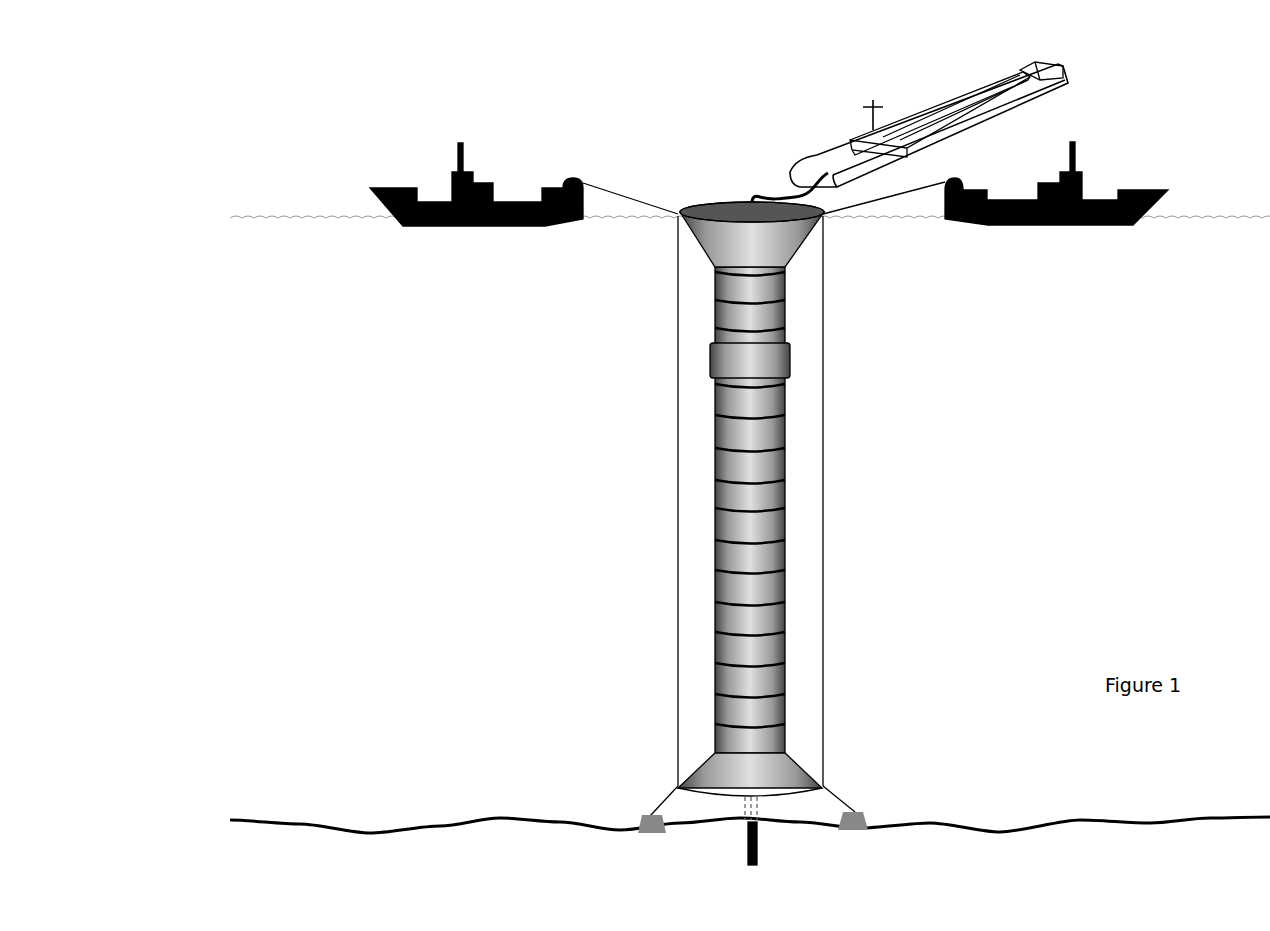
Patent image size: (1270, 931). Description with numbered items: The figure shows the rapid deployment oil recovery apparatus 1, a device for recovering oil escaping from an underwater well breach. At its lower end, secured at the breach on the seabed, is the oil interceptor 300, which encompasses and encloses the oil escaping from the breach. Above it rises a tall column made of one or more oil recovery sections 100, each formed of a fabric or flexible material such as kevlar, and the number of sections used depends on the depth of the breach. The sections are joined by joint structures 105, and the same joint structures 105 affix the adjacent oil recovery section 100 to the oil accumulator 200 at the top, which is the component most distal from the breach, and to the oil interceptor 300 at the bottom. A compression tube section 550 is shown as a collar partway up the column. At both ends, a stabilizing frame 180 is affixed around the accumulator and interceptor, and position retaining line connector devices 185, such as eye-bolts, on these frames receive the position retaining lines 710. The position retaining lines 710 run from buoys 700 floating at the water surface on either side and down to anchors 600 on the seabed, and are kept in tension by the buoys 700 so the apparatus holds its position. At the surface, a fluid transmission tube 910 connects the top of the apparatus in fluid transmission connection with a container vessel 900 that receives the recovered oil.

The rapid deployment oil recovery apparatus 1 is at (1008, 419).
The oil recovery section 100 is at (785, 306).
The joint structure 105 is at (748, 602).
The stabilizing frame 180 is at (720, 223).
The position retaining line connector device 185 is at (678, 217).
The oil accumulator 200 is at (730, 248).
The oil interceptor 300 is at (790, 792).
The compression tube section 550 is at (785, 363).
The anchor 600 is at (642, 826).
The buoy 700 is at (497, 187).
The position retaining line 710 is at (605, 188).
The container vessel 900 is at (917, 108).
The fluid transmission tube 910 is at (835, 170).